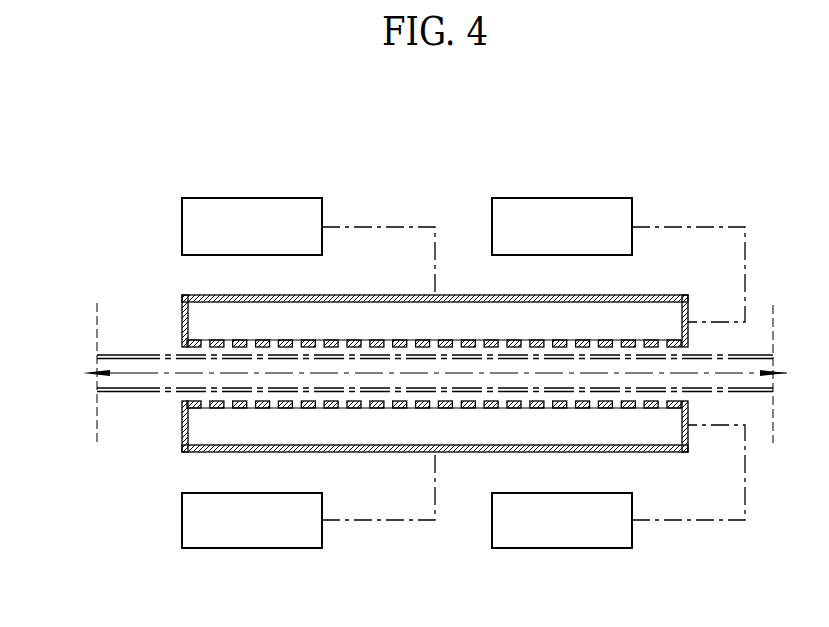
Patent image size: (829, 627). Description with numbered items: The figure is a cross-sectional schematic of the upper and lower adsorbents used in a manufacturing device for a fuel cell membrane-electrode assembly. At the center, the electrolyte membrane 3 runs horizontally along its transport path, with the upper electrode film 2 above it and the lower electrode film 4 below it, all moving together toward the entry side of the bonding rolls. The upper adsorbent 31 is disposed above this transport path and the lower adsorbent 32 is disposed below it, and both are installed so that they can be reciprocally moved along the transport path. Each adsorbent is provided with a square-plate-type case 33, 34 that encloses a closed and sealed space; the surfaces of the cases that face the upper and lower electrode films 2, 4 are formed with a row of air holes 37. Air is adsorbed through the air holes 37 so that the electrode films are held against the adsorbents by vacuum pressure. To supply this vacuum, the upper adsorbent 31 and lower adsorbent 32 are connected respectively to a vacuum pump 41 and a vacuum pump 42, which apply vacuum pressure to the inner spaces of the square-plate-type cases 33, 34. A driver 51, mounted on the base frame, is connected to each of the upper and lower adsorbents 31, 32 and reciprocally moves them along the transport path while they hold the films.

The upper electrode film 2 is at (143, 355).
The electrolyte membrane 3 is at (130, 373).
The lower electrode film 4 is at (155, 392).
The upper adsorbent 31 is at (407, 262).
The lower adsorbent 32 is at (408, 488).
The square-plate-type case 33 is at (182, 311).
The square-plate-type case 34 is at (182, 440).
The air holes 37 is at (640, 340).
The vacuum pump 41 is at (252, 198).
The vacuum pump 42 is at (255, 548).
The driver 51 is at (562, 198).